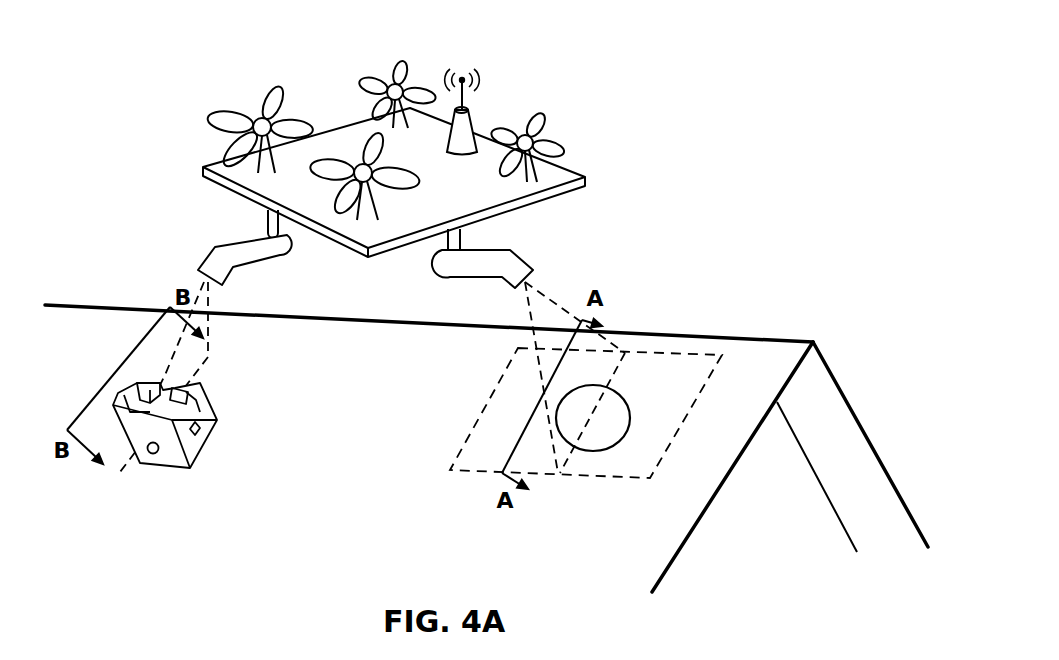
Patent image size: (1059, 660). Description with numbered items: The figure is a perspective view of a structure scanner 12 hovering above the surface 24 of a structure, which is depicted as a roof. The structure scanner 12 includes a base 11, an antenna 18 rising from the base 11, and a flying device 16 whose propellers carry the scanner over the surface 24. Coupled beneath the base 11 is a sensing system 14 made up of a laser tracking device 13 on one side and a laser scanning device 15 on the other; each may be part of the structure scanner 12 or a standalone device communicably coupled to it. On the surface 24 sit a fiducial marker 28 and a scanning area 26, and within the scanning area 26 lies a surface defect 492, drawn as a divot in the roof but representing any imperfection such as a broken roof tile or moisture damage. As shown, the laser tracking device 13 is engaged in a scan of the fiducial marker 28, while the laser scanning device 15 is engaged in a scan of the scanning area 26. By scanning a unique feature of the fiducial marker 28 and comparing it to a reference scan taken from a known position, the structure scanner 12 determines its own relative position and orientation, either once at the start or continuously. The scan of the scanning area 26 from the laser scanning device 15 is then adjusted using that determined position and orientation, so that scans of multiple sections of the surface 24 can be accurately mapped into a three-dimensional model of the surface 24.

The base 11 is at (445, 193).
The structure scanner 12 is at (330, 145).
The laser tracking device 13 is at (243, 284).
The sensing system 14 is at (381, 292).
The laser scanning device 15 is at (493, 290).
The flying device 16 is at (381, 60).
The antenna 18 is at (496, 75).
The surface 24 is at (341, 511).
The scanning area 26 is at (628, 462).
The fiducial marker 28 is at (203, 450).
The surface defect 492 is at (645, 406).